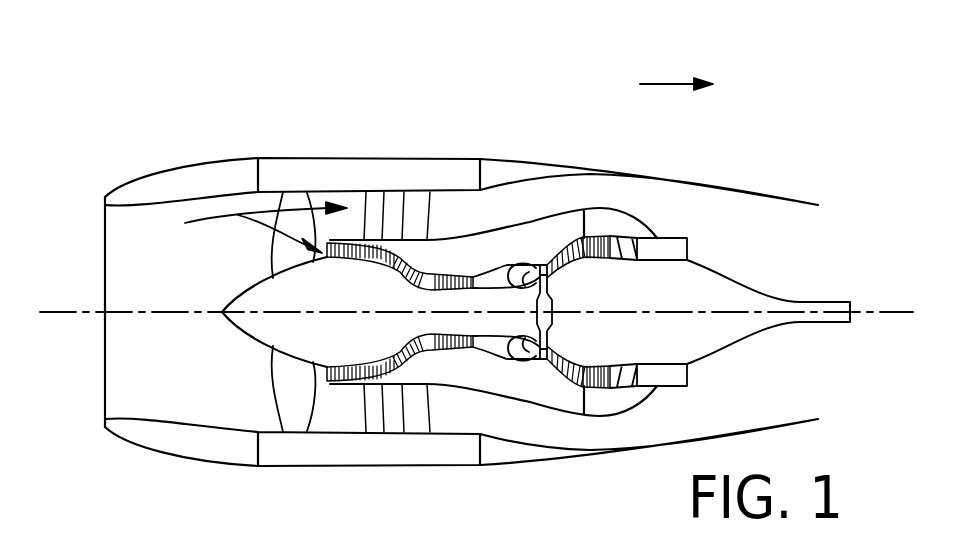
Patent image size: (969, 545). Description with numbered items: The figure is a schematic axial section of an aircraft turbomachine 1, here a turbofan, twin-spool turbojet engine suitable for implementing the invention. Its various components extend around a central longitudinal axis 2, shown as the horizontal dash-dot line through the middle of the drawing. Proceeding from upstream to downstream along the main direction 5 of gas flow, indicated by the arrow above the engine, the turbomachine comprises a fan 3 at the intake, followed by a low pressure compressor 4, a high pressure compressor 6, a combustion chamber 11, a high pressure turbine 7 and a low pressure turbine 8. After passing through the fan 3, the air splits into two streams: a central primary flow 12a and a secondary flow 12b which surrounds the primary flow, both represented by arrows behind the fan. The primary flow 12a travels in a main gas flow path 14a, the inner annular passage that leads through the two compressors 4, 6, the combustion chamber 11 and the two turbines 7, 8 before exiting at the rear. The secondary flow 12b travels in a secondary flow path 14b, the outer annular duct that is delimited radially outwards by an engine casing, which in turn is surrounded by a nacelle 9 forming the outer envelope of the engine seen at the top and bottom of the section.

The aircraft turbomachine 1 is at (198, 113).
The central longitudinal axis 2 is at (50, 310).
The fan 3 is at (283, 382).
The low pressure compressor 4 is at (352, 243).
The main direction of gas flow 5 is at (673, 84).
The high pressure compressor 6 is at (460, 276).
The high pressure turbine 7 is at (565, 250).
The low pressure turbine 8 is at (609, 238).
The nacelle 9 is at (376, 170).
The combustion chamber 11 is at (516, 265).
The primary flow 12a is at (280, 235).
The secondary flow 12b is at (288, 207).
The main gas flow path 14a is at (412, 350).
The secondary flow path 14b is at (543, 427).